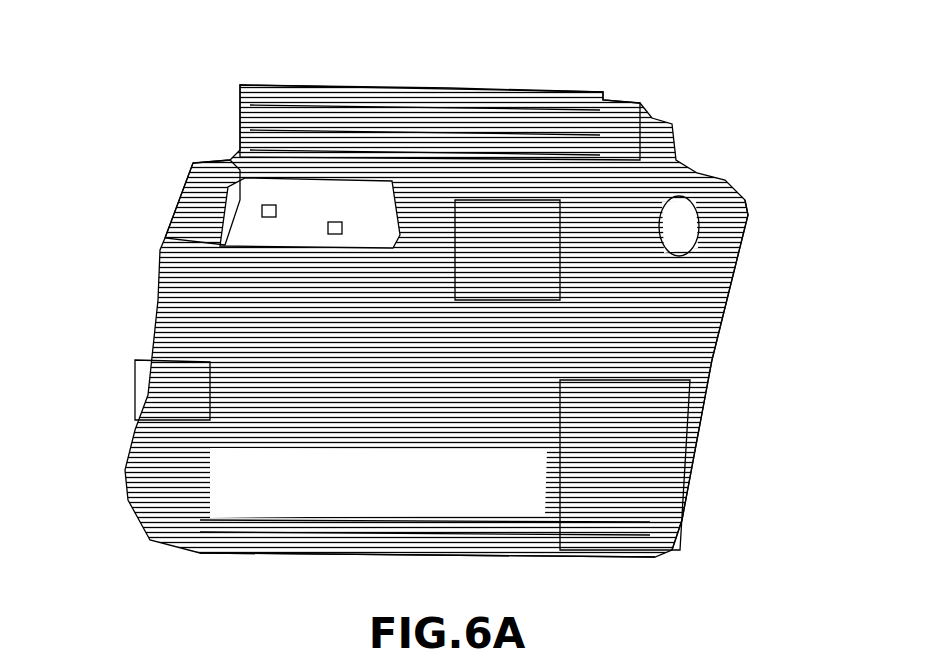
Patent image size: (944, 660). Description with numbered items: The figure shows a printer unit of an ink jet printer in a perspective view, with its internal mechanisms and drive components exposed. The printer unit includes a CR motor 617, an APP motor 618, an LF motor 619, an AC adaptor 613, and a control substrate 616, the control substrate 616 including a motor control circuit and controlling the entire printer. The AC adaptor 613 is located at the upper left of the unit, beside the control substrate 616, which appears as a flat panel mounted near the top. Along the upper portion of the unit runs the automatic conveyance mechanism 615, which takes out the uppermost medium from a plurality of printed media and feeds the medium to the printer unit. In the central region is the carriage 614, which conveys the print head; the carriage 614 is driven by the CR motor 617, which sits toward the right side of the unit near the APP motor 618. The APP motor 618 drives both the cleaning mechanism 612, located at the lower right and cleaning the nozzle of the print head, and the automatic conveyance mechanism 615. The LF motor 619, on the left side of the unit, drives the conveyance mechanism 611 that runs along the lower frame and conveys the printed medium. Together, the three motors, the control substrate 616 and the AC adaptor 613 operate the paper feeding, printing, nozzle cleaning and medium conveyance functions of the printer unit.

The conveyance mechanism 611 is at (300, 367).
The cleaning mechanism 612 is at (600, 370).
The AC adaptor 613 is at (197, 227).
The carriage 614 is at (485, 292).
The automatic conveyance mechanism 615 is at (408, 86).
The control substrate 616 is at (247, 195).
The CR motor 617 is at (700, 228).
The APP motor 618 is at (713, 307).
The LF motor 619 is at (153, 371).